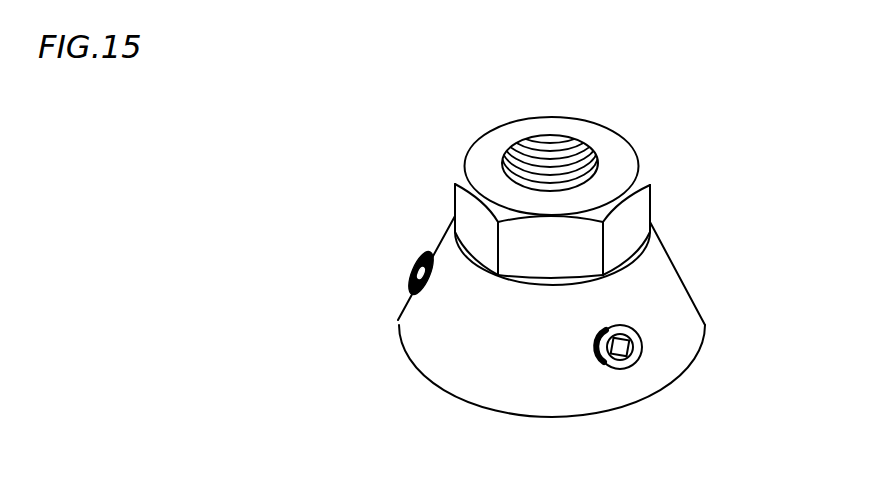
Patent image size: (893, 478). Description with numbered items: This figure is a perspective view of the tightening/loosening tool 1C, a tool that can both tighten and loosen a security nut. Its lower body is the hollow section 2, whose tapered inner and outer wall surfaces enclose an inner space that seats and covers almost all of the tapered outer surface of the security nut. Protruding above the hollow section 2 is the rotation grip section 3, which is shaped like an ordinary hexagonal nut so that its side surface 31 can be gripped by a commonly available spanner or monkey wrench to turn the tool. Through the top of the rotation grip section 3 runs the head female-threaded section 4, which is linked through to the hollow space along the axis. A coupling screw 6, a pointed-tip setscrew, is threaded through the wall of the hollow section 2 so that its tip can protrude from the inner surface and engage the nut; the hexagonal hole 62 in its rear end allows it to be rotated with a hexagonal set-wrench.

The tightening/loosening tool 1C is at (372, 127).
The hollow section 2 is at (683, 268).
The rotation grip section 3 is at (602, 127).
The side surface 31 is at (650, 202).
The head female-threaded section 4 is at (545, 148).
The coupling screw 6 is at (413, 267).
The hexagonal hole 62 is at (633, 364).